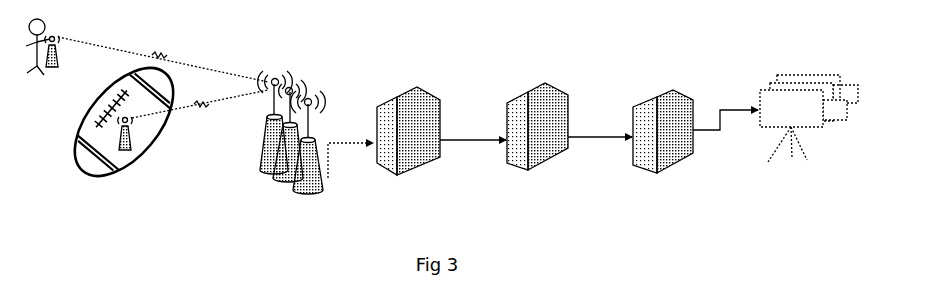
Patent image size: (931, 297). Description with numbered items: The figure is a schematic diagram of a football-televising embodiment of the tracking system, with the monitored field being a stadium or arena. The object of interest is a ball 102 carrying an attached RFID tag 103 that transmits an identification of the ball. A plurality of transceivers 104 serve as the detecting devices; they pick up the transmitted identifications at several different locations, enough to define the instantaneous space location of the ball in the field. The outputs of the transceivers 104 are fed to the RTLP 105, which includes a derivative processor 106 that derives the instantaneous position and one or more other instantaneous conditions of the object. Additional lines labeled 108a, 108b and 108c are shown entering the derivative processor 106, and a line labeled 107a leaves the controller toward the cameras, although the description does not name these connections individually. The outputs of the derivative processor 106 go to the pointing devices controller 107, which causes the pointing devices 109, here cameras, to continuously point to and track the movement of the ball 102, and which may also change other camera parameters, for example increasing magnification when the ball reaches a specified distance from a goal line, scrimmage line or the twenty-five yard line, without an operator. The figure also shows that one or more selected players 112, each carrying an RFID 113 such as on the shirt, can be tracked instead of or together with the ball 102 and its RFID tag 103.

The ball 102 is at (132, 123).
The RFID tag 103 is at (124, 121).
The transceivers 104 is at (279, 182).
The RTLP 105 is at (392, 98).
The derivative processor 106 is at (508, 95).
The pointing devices controller 107 is at (637, 98).
The output data streams 107a-107b 107a is at (732, 115).
The data input a 108a is at (507, 158).
The data input b 108b is at (531, 172).
The data input c 108c is at (562, 155).
The pointing devices 109 is at (770, 88).
The player 112 is at (49, 39).
The RFID 113 is at (51, 70).